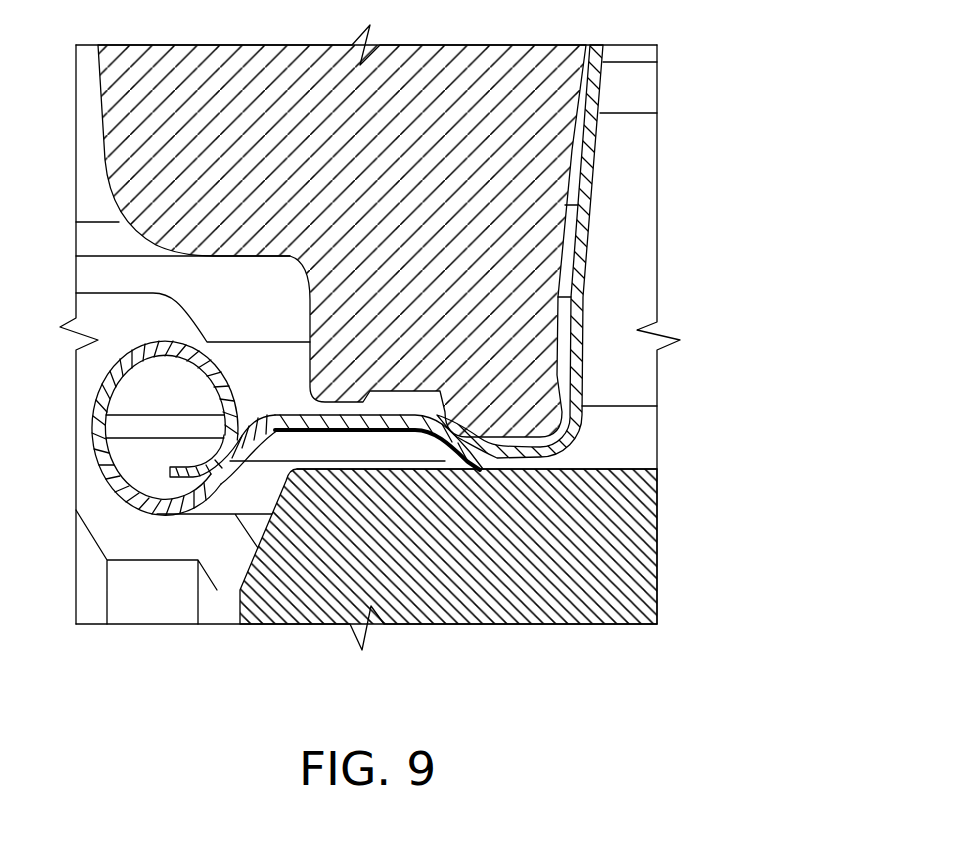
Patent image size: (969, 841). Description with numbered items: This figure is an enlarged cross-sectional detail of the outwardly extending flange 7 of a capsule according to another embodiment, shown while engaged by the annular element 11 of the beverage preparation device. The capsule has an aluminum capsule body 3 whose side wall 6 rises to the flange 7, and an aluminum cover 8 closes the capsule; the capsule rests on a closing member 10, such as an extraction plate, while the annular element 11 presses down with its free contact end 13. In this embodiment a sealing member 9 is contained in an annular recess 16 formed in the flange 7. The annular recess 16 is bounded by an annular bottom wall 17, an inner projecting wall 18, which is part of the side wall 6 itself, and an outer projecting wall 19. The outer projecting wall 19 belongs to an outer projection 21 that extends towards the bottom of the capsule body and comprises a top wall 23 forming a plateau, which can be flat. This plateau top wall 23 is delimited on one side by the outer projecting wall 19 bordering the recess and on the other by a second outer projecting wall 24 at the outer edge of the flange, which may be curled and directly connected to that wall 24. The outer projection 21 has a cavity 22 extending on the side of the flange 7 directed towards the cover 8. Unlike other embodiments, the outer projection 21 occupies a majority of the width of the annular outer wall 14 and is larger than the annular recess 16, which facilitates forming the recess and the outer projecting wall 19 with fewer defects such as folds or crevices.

The capsule body 3 is at (608, 62).
The side wall 6 is at (593, 147).
The outwardly extending flange 7 is at (92, 480).
The cover 8 is at (638, 468).
The sealing member 9 is at (563, 438).
The closing member 10 is at (657, 592).
The annular element 11 is at (570, 113).
The free contact end 13 is at (507, 420).
The annular outer wall 14 is at (345, 431).
The annular recess 16 is at (572, 443).
The annular bottom wall 17 is at (480, 465).
The inner projecting wall 18 is at (568, 390).
The outer projecting wall 19 is at (448, 453).
The outer projection 21 is at (302, 416).
The cavity 22 is at (317, 453).
The top wall 23 is at (283, 415).
The second outer projecting wall 24 is at (242, 463).